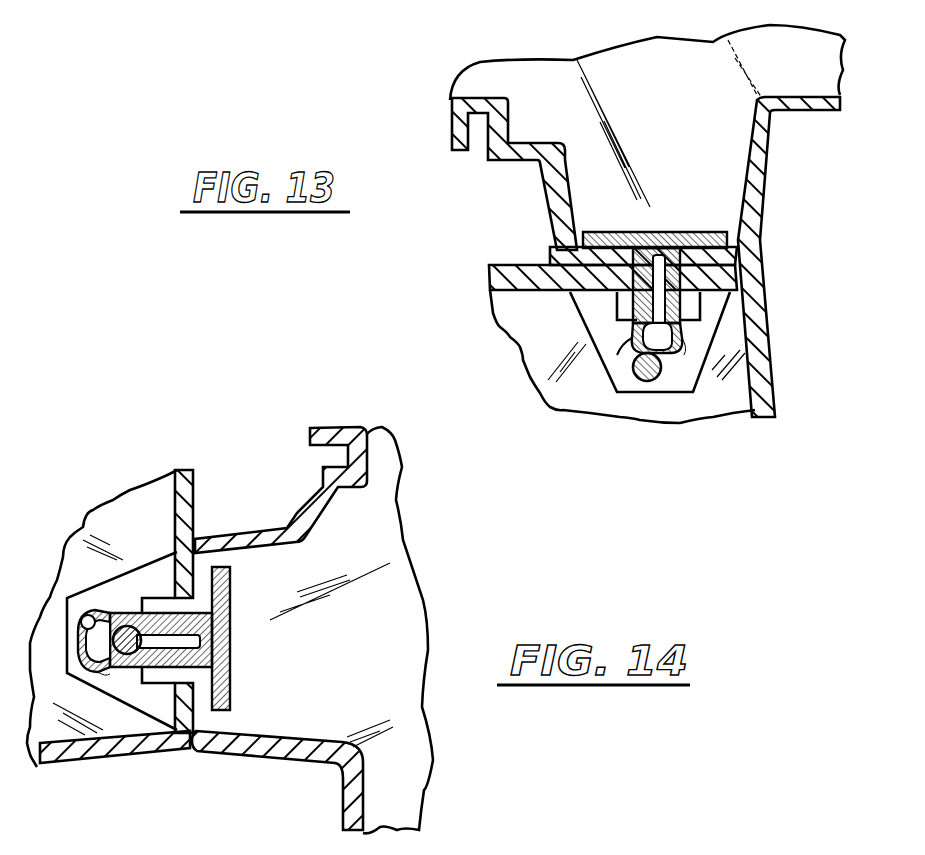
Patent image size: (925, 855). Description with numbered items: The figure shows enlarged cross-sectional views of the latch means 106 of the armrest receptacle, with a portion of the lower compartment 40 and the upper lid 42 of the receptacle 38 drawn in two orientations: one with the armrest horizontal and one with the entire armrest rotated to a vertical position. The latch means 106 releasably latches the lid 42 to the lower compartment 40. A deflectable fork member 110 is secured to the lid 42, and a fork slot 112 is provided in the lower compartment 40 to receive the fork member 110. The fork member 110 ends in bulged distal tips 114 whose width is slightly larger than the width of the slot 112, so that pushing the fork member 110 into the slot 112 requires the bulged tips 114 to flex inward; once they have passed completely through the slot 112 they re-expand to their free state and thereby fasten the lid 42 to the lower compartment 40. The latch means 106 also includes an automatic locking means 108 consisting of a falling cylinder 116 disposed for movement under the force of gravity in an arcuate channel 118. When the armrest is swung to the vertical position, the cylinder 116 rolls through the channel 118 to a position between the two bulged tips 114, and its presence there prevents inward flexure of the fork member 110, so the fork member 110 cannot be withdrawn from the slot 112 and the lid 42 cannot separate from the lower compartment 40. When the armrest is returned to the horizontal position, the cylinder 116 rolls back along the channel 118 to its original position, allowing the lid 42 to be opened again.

In FIG. 13, the receptacle means 38 is at (615, 41).
In FIG. 14, the receptacle means 38 is at (435, 601).
In FIG. 13, the lower compartment 40 is at (768, 350).
In FIG. 14, the lower compartment 40 is at (128, 490).
In FIG. 13, the upper lid 42 is at (775, 140).
In FIG. 14, the upper lid 42 is at (376, 445).
In FIG. 13, the latch means 106 is at (690, 343).
In FIG. 14, the latch means 106 is at (130, 698).
In FIG. 13, the automatic locking means 108 is at (677, 383).
In FIG. 14, the automatic locking means 108 is at (78, 651).
In FIG. 13, the deflectable fork member 110 is at (633, 327).
In FIG. 14, the deflectable fork member 110 is at (127, 603).
In FIG. 13, the fork slot 112 is at (627, 303).
In FIG. 14, the fork slot 112 is at (200, 658).
In FIG. 13, the bulged distal tips 114 is at (690, 350).
In FIG. 14, the bulged distal tips 114 is at (122, 656).
In FIG. 13, the falling cylinder 116 is at (640, 383).
In FIG. 14, the falling cylinder 116 is at (120, 643).
In FIG. 13, the arcuate channel 118 is at (683, 353).
In FIG. 14, the arcuate channel 118 is at (98, 608).